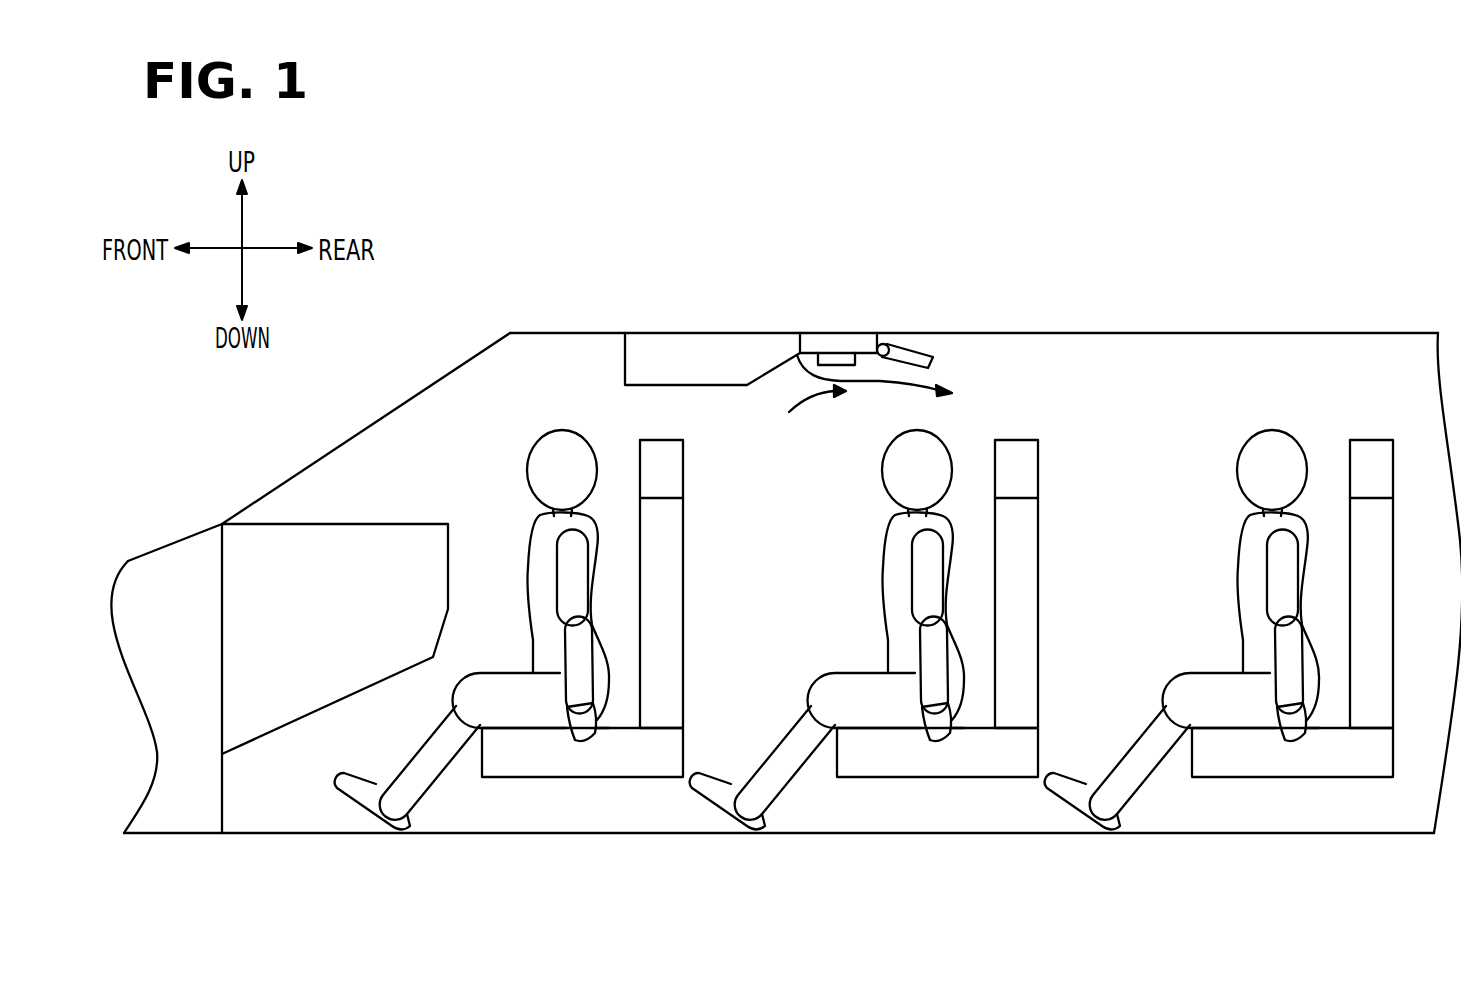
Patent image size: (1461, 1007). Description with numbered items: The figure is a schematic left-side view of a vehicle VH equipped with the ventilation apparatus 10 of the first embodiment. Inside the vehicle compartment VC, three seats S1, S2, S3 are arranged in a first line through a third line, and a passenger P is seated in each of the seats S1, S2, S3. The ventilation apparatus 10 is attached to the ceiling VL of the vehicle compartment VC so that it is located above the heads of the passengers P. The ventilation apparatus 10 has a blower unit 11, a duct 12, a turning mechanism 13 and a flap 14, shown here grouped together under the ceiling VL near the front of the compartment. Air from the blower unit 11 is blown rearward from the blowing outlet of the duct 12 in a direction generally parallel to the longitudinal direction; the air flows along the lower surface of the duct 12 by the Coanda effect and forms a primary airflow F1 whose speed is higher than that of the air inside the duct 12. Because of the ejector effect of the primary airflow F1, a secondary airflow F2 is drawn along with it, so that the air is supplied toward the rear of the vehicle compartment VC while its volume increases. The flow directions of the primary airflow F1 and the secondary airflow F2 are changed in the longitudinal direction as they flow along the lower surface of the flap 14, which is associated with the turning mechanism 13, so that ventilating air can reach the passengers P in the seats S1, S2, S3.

The ventilation apparatus 10 is at (913, 262).
The blower unit 11 is at (700, 356).
The duct 12 is at (825, 347).
The turning mechanism 13 is at (845, 353).
The flap 14 is at (912, 347).
The primary airflow F1 is at (930, 383).
The secondary airflow F2 is at (808, 400).
The passenger P is at (530, 452).
The seat S1 is at (588, 778).
The seat S2 is at (930, 778).
The seat S3 is at (1301, 778).
The vehicle compartment VC is at (806, 542).
The vehicle VH is at (259, 460).
The ceiling VL is at (1127, 334).